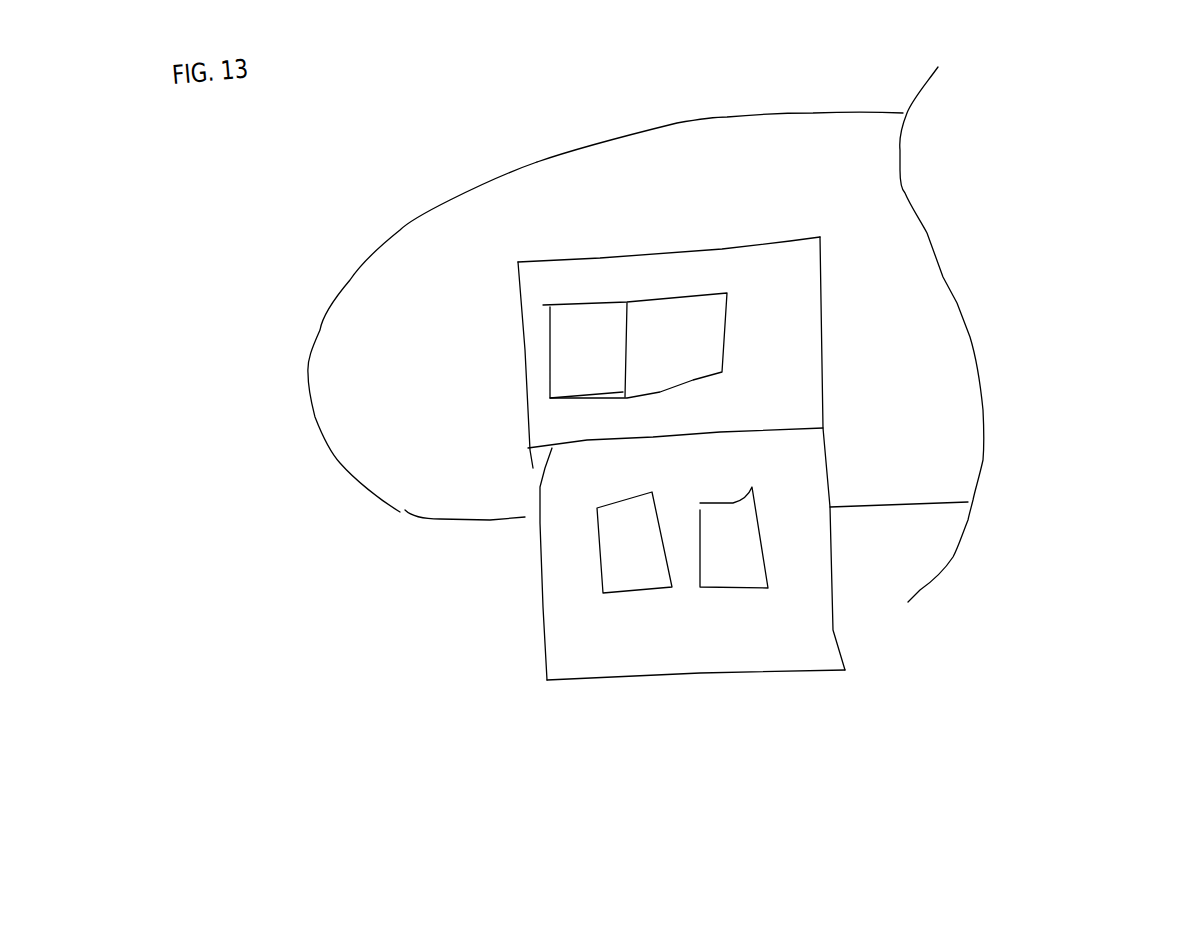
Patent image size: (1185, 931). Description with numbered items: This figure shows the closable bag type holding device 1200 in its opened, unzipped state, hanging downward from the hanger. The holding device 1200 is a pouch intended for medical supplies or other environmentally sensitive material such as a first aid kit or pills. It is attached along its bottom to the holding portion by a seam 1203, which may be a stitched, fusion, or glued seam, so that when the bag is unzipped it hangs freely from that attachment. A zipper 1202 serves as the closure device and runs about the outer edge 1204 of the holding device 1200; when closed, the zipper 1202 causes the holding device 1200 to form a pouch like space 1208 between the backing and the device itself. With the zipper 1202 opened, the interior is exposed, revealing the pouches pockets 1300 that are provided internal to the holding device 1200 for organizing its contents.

The holding device 1200 is at (300, 229).
The zipper 1202 is at (553, 258).
The seam 1203 is at (552, 452).
The outer edge 1204 is at (722, 250).
The pouch like space 1208 is at (793, 392).
The pouches pockets 1300 is at (607, 317).